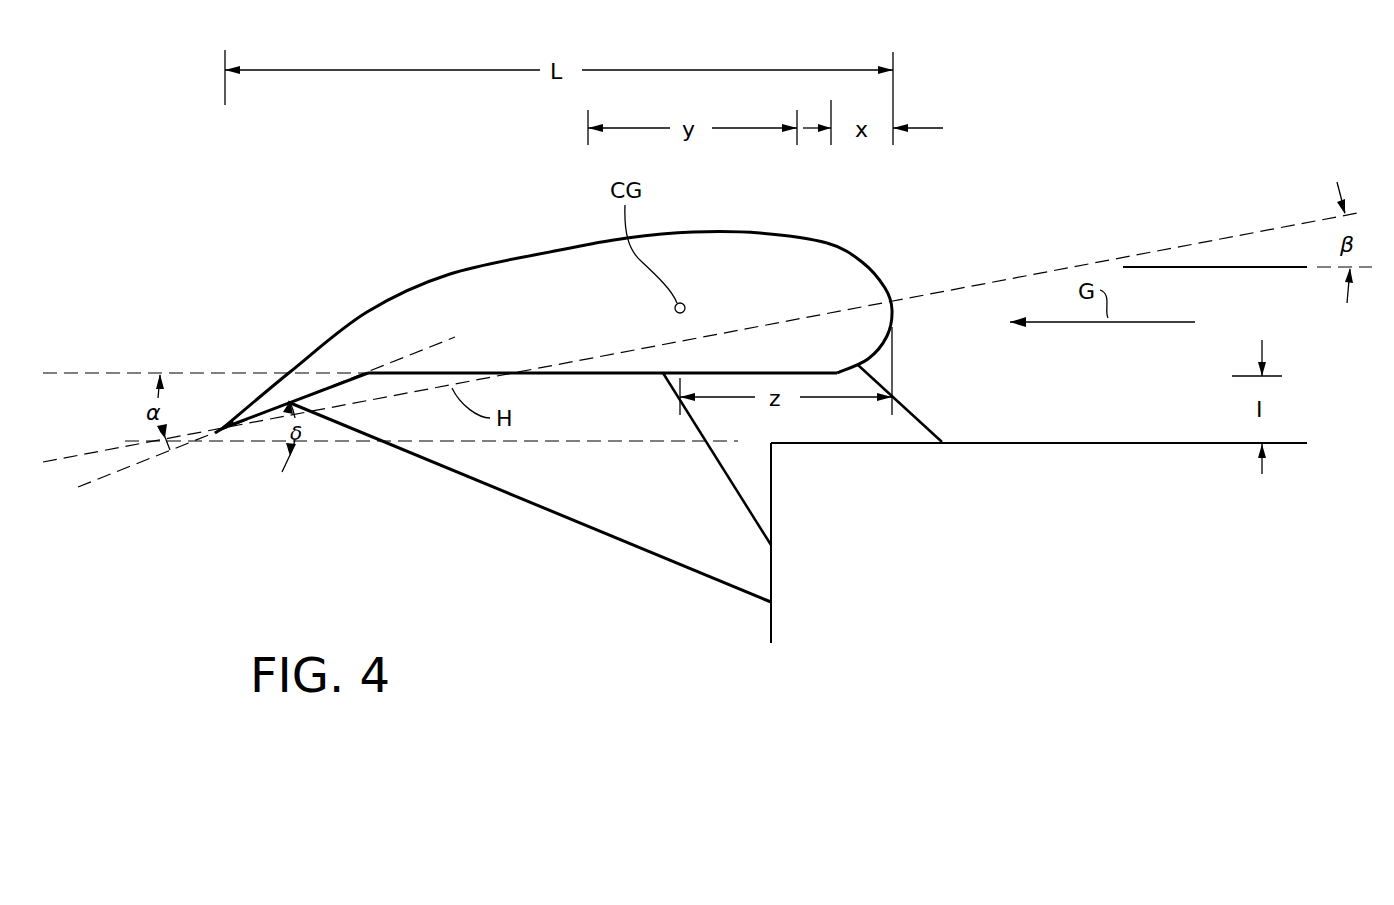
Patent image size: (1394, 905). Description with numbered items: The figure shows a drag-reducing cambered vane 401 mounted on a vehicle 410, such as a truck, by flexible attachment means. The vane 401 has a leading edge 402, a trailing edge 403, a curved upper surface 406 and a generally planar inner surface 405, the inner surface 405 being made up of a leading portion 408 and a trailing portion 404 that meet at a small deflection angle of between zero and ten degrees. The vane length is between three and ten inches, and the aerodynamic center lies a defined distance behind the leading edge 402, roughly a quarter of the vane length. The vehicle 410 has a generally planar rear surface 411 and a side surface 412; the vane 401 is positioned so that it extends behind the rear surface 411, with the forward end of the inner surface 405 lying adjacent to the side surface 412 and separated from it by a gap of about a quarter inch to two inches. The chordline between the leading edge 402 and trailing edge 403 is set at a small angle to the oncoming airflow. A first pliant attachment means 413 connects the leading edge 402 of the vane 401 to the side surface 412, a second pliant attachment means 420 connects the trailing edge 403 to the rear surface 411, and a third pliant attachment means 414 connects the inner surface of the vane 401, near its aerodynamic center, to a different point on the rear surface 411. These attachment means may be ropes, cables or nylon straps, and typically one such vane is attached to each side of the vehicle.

The cambered vane 401 is at (598, 361).
The leading edge 402 is at (893, 300).
The trailing edge 403 is at (224, 433).
The trailing portion 404 is at (330, 388).
The inner surface 405 is at (530, 462).
The curved upper surface 406 is at (480, 272).
The leading portion 408 is at (422, 374).
The vehicle 410 is at (1039, 504).
The rear surface 411 is at (772, 530).
The side surface 412 is at (1077, 447).
The first pliant attachment means 413 is at (913, 414).
The third pliant attachment means 414 is at (735, 492).
The second pliant attachment means 420 is at (688, 568).